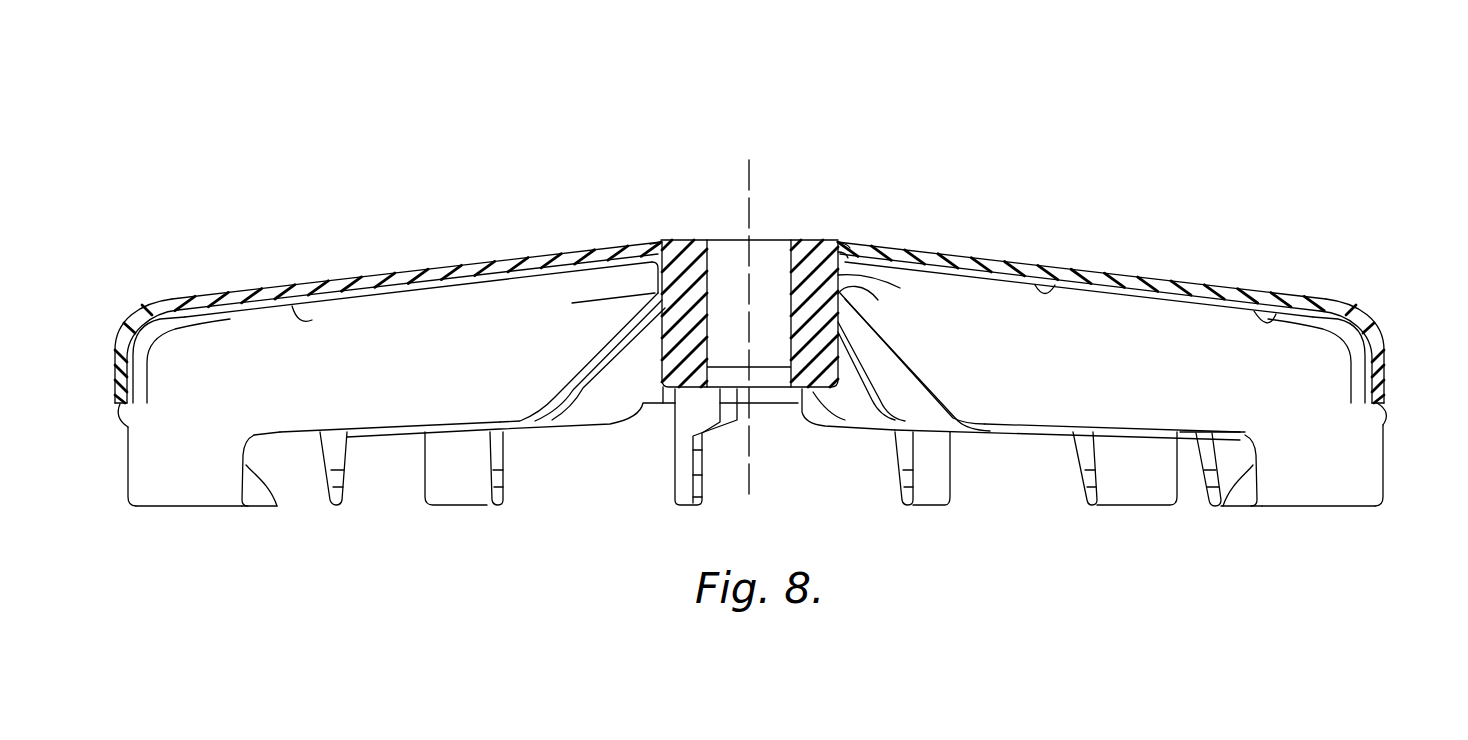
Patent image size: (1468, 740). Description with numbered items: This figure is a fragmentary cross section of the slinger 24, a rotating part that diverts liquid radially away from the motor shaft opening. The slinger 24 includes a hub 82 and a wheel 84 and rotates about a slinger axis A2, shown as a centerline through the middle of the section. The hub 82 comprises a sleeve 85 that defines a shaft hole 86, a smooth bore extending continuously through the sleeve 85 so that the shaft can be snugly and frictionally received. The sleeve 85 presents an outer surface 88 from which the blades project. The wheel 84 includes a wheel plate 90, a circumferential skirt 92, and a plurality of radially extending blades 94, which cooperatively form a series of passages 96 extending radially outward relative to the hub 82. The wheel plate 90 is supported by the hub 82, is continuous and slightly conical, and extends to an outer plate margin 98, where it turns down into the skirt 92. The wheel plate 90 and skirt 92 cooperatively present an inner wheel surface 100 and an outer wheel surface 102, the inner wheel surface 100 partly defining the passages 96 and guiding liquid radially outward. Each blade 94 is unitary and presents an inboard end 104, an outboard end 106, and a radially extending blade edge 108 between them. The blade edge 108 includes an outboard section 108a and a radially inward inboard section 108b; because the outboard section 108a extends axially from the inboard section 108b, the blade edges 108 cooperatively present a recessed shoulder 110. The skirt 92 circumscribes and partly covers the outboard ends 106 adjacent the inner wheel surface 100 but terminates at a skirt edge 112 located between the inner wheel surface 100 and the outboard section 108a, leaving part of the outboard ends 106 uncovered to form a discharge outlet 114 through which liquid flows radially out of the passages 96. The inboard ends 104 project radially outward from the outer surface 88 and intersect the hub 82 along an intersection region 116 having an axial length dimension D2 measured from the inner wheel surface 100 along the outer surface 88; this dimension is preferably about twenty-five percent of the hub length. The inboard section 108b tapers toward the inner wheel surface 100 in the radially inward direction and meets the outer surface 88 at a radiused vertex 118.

The slinger 24 is at (1200, 140).
The hub 82 is at (672, 340).
The wheel 84 is at (503, 265).
The sleeve 85 is at (813, 370).
The shaft hole 86 is at (785, 240).
The outer surface 88 is at (838, 275).
The wheel plate 90 is at (1115, 285).
The circumferential skirt 92 is at (1381, 374).
The blades 94 is at (1177, 318).
The passages 96 is at (312, 320).
The outer plate margin 98 is at (158, 301).
The inner wheel surface 100 is at (1048, 284).
The outer wheel surface 102 is at (985, 262).
The inboard end 104 is at (638, 208).
The outboard end 106 is at (128, 497).
The blade edge 108 is at (393, 433).
The outboard section 108a is at (228, 507).
The inboard section 108b is at (333, 505).
The recessed shoulder 110 is at (277, 505).
The skirt edge 112 is at (130, 425).
The discharge outlet 114 is at (118, 451).
The intersection region 116 is at (674, 236).
The vertex 118 is at (878, 300).
The slinger axis A2 is at (752, 176).
The axial length dimension D2 is at (600, 330).